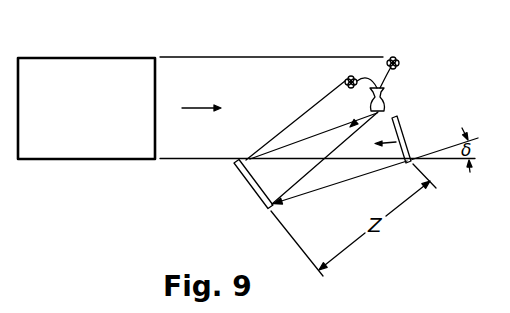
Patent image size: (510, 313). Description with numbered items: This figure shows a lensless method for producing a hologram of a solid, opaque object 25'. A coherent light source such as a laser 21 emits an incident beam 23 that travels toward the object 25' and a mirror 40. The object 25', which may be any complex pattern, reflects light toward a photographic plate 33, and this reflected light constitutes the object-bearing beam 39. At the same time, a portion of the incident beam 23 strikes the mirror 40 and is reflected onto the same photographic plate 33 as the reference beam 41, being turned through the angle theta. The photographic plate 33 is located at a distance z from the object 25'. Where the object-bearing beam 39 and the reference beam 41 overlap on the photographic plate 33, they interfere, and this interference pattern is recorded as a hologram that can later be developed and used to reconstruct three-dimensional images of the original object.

The laser 21 is at (115, 64).
The incident beam 23 is at (257, 37).
The opaque object 25' is at (392, 84).
The photographic plate 33 is at (247, 184).
The object-bearing beam 39 is at (248, 157).
The mirror 40 is at (423, 139).
The reference beam 41 is at (384, 162).